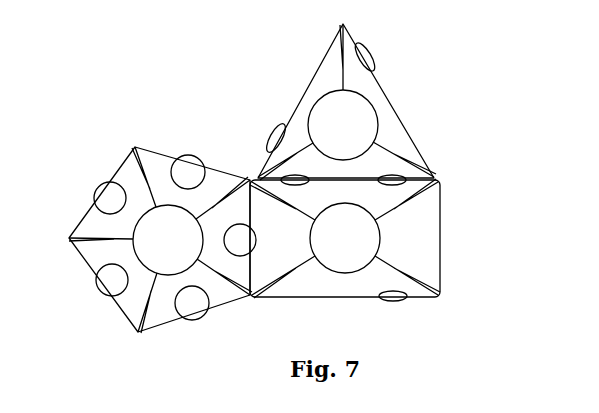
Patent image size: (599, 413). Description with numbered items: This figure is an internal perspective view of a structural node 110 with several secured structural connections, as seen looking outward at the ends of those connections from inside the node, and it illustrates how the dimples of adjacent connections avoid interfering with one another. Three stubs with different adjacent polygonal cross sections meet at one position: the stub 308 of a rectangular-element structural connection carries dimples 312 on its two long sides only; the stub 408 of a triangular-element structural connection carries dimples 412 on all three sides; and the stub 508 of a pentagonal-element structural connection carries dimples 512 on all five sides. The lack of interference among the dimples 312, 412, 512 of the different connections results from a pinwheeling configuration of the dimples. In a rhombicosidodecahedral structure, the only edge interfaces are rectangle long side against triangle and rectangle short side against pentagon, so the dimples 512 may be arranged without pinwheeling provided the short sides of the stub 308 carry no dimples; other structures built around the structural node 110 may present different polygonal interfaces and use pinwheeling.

The structural node 110 is at (517, 78).
The stub 308 is at (345, 238).
The dimples 312 is at (287, 176).
The stub 408 is at (347, 102).
The dimples 412 is at (373, 54).
The stub 508 is at (160, 240).
The dimples 512 is at (98, 185).